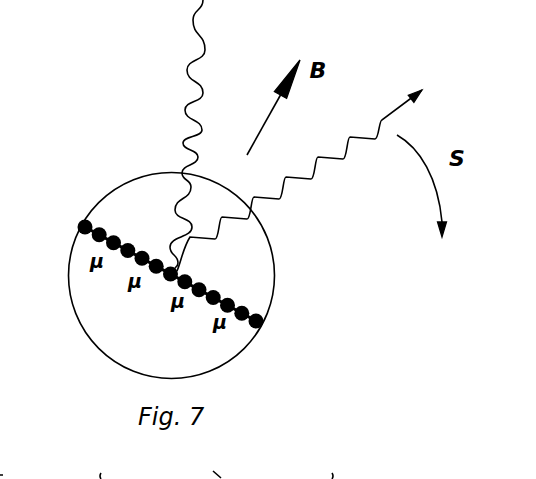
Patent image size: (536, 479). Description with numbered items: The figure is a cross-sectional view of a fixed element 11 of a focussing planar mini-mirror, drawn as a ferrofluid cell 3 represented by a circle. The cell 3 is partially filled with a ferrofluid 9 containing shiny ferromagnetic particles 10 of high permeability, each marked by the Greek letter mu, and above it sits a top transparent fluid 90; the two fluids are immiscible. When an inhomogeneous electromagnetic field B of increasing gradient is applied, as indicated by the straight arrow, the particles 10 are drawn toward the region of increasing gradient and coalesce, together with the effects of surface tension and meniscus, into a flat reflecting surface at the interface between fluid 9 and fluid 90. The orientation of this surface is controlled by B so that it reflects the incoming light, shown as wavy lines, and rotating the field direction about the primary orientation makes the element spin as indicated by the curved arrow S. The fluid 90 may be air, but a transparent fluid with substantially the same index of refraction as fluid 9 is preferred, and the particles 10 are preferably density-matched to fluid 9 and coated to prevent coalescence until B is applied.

The ferrofluid cell 3 is at (231, 279).
The ferrofluid 9 is at (118, 339).
The ferromagnetic particles 10 is at (138, 247).
The fixed element 11 is at (26, 356).
The top transparent fluid 90 is at (258, 254).